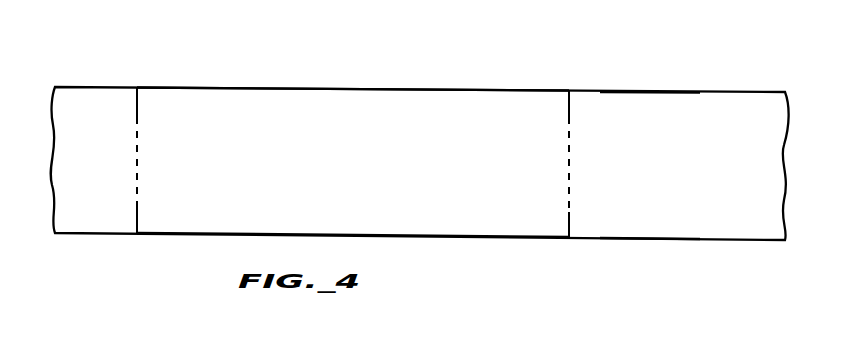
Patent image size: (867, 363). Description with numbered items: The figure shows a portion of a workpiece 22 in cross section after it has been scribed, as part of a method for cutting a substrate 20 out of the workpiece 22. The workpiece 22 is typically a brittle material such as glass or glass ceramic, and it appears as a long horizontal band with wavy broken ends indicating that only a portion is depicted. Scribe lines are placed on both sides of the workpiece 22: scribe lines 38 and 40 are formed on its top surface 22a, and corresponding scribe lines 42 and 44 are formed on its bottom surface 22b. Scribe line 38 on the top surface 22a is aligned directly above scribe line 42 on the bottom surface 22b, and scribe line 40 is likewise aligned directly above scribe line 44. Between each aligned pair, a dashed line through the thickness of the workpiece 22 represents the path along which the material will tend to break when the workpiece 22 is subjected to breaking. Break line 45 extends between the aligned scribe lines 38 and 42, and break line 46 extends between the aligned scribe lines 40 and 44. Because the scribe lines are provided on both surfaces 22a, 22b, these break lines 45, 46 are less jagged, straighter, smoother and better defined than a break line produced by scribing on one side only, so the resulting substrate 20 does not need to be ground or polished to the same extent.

The substrate 20 is at (342, 98).
The workpiece 22 is at (715, 105).
The top surface 22a is at (645, 92).
The bottom surface 22b is at (658, 240).
The scribe line 38 is at (137, 100).
The scribe line 40 is at (569, 105).
The scribe line 42 is at (137, 220).
The scribe line 44 is at (569, 223).
The break line 45 is at (137, 153).
The break line 46 is at (569, 157).